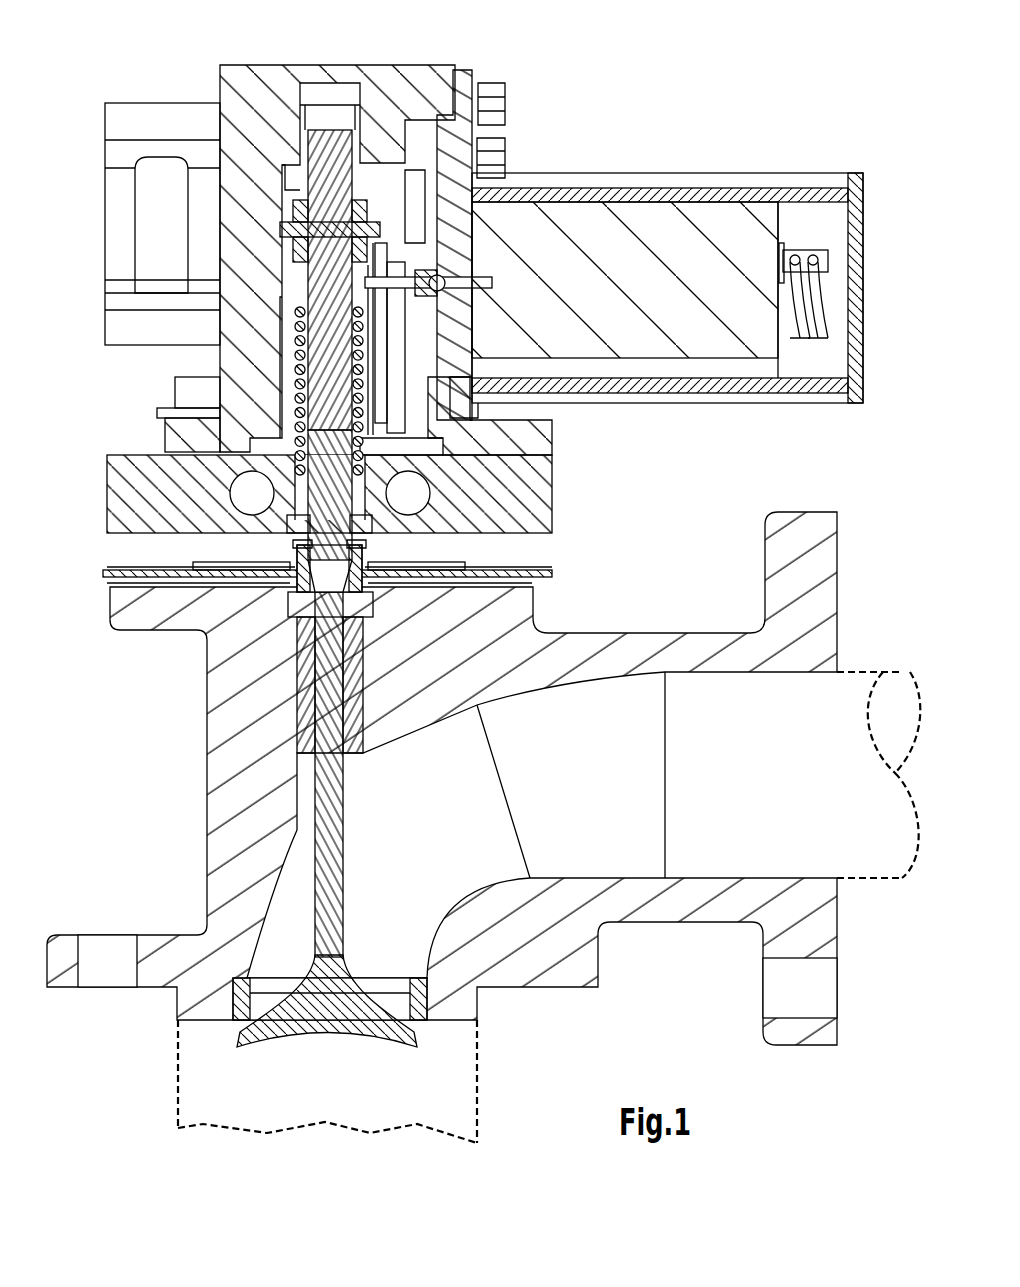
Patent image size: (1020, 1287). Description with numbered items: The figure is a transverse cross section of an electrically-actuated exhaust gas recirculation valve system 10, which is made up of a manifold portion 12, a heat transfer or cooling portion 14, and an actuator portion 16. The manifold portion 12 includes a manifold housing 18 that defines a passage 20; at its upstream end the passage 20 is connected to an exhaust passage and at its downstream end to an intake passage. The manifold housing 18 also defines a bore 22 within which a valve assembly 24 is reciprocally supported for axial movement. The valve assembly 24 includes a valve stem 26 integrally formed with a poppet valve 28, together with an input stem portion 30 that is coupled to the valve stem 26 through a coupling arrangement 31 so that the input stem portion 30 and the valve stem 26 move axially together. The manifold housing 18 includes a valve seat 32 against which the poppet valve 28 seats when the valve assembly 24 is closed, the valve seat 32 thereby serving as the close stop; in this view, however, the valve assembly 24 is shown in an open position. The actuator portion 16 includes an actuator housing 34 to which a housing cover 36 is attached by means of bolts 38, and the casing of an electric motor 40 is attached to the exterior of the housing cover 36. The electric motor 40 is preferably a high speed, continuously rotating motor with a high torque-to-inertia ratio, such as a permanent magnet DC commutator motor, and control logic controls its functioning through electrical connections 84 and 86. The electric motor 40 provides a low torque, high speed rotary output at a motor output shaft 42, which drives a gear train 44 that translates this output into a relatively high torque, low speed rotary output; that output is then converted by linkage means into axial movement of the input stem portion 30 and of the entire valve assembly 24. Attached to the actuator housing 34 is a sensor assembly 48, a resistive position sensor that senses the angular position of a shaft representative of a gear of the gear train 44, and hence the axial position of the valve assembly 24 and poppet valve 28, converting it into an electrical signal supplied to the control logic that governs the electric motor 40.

The EGR valve system 10 is at (483, 571).
The manifold portion 12 is at (690, 625).
The heat transfer (cooling) portion 14 is at (100, 490).
The actuator portion 16 is at (483, 296).
The manifold housing 18 is at (697, 893).
The passage 20 is at (568, 763).
The bore 22 is at (360, 683).
The valve assembly 24 is at (335, 845).
The valve stem 26 is at (330, 800).
The poppet valve 28 is at (328, 1028).
The input stem portion 30 is at (332, 145).
The coupling arrangement 31 is at (290, 553).
The valve seat 32 is at (225, 1000).
The actuator housing 34 is at (435, 90).
The housing cover 36 is at (452, 132).
The bolts 38 is at (495, 105).
The electric motor 40 is at (680, 265).
The motor output shaft 42 is at (426, 285).
The gear train 44 is at (405, 296).
The sensor assembly 48 is at (100, 240).
The electrical connection 84 is at (805, 322).
The electrical connection 86 is at (822, 312).